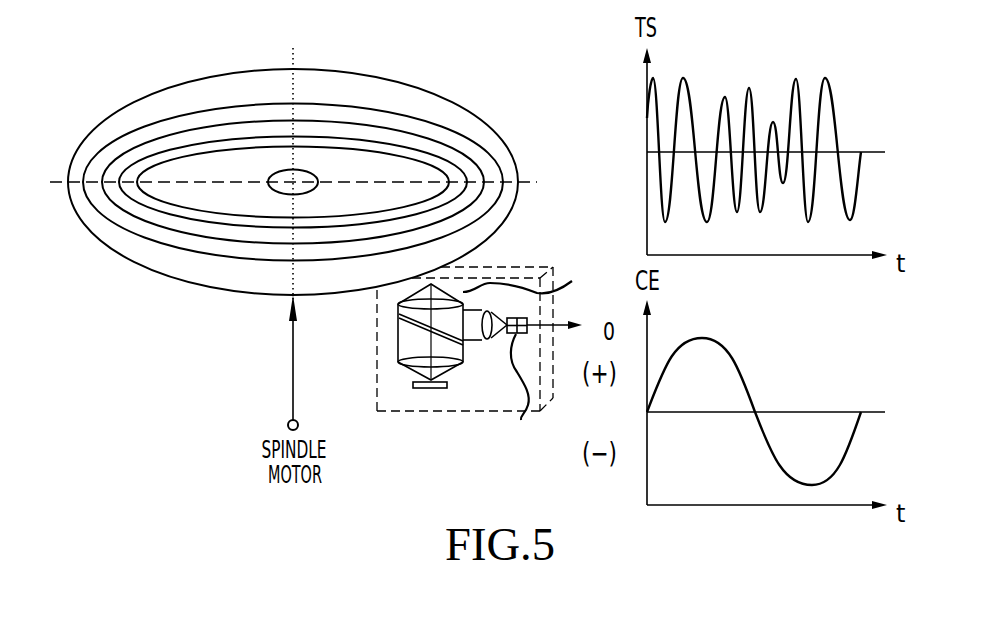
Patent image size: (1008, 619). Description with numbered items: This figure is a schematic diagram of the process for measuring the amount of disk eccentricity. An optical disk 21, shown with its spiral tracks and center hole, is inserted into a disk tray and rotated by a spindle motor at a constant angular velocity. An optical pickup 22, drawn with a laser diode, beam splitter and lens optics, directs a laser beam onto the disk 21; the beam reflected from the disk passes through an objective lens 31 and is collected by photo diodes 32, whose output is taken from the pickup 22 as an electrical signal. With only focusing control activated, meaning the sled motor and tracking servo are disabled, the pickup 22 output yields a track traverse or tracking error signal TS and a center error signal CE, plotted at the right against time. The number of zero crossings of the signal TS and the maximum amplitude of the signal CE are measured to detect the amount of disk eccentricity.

The optical disk 21 is at (318, 67).
The optical pickup 22 is at (502, 270).
The objective lens 31 is at (530, 275).
The photo diodes 32 is at (516, 396).